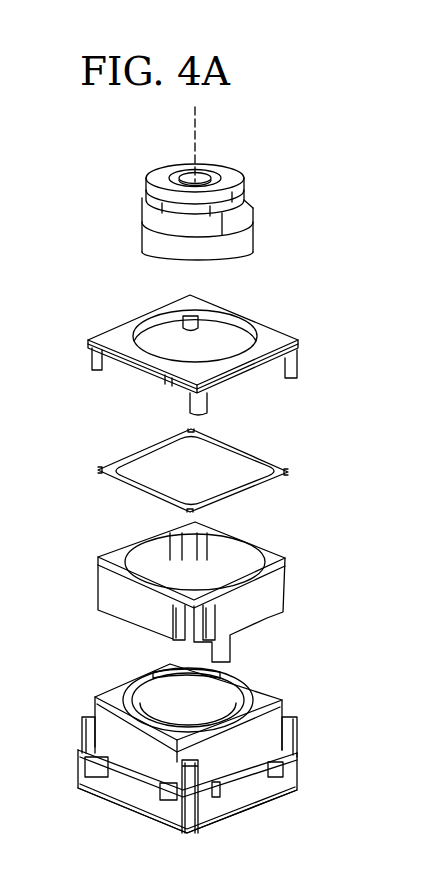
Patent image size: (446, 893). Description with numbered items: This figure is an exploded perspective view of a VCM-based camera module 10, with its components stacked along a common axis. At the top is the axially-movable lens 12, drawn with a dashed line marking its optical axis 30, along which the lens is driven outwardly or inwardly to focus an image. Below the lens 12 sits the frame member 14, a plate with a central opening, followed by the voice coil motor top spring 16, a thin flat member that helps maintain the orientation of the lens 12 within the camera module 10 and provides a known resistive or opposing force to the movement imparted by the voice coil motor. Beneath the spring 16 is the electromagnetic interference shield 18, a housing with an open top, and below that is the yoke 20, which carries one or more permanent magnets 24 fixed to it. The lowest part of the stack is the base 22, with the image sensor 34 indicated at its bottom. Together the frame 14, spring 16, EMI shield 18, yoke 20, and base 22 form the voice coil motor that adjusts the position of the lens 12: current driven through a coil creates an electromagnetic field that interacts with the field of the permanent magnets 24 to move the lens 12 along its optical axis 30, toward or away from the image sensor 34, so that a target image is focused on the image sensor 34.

The camera module 10 is at (98, 253).
The axially-movable lens 12 is at (258, 177).
The frame member 14 is at (254, 299).
The voice coil motor top spring 16 is at (244, 422).
The electromagnetic interference (EMI) shield 18 is at (268, 527).
The yoke 20 is at (254, 666).
The base 22 is at (294, 765).
The permanent magnet 24 is at (133, 674).
The optical axis 30 is at (203, 137).
The image sensor 34 is at (264, 807).